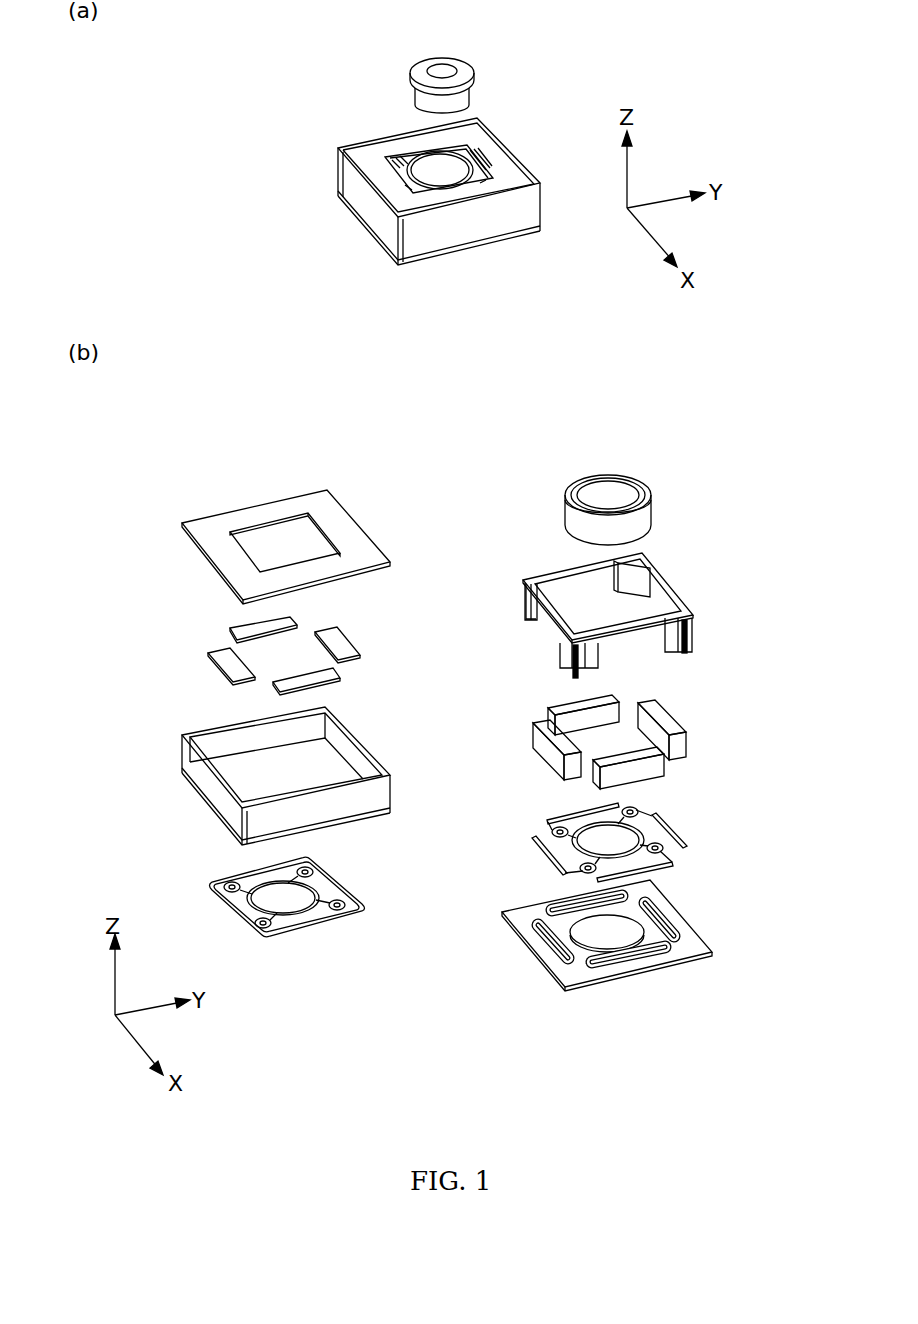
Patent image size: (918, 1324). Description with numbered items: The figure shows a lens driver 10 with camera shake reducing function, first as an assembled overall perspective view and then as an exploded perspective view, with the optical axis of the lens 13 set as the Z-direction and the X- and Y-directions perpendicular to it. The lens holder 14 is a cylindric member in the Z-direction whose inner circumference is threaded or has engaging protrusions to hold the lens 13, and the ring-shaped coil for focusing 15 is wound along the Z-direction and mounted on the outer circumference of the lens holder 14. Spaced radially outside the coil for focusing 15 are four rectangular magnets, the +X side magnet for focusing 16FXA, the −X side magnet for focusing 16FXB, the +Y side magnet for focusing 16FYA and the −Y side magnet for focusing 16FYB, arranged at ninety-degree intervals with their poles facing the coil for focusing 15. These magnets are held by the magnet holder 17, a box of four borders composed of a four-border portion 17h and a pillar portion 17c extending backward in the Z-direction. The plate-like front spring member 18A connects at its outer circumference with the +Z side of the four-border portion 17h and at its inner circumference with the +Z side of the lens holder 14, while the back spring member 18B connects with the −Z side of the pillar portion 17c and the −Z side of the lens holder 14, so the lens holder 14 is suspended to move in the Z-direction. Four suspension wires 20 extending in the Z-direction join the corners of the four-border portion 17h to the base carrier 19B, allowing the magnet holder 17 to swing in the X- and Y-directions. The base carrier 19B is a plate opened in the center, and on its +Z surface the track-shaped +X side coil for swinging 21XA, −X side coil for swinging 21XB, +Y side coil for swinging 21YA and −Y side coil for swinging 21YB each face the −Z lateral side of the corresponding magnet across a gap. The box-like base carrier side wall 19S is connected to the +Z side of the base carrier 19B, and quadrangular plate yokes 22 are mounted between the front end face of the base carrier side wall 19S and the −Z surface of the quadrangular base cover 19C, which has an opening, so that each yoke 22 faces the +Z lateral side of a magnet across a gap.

The lens driver with camera shake reducing function 10 is at (362, 152).
The lens 13 is at (417, 63).
The lens holder 14 is at (612, 488).
The coil for focusing 15 is at (643, 522).
The magnet holder 17 is at (660, 565).
The pillar portion 17c is at (527, 613).
The four-border portion 17h is at (675, 589).
The suspension wire 20 is at (690, 645).
The base cover 19C is at (210, 528).
The yoke 22 is at (247, 632).
The base carrier side wall 19S is at (193, 773).
The front spring member 18A is at (223, 873).
The −X side magnet for focusing 16FXB is at (552, 705).
The +Y side magnet for focusing 16FYA is at (660, 715).
The −Y side magnet for focusing 16FYB is at (543, 755).
The +X side magnet for focusing 16FXA is at (647, 773).
The back spring member 18B is at (677, 833).
The base carrier 19B is at (552, 980).
The −X side coil for swinging 21XB is at (560, 898).
The +Y side coil for swinging 21YA is at (722, 900).
The −Y side coil for swinging 21YB is at (527, 942).
The +X side coil for swinging 21XA is at (667, 973).